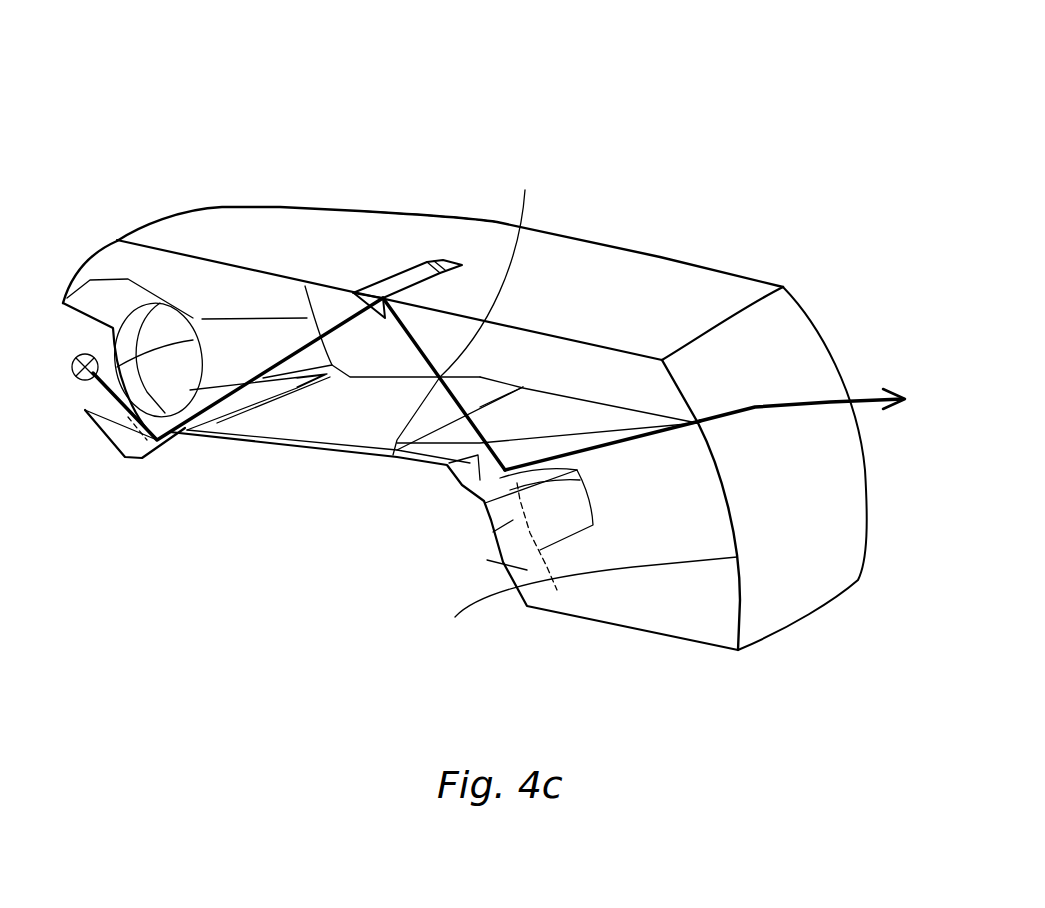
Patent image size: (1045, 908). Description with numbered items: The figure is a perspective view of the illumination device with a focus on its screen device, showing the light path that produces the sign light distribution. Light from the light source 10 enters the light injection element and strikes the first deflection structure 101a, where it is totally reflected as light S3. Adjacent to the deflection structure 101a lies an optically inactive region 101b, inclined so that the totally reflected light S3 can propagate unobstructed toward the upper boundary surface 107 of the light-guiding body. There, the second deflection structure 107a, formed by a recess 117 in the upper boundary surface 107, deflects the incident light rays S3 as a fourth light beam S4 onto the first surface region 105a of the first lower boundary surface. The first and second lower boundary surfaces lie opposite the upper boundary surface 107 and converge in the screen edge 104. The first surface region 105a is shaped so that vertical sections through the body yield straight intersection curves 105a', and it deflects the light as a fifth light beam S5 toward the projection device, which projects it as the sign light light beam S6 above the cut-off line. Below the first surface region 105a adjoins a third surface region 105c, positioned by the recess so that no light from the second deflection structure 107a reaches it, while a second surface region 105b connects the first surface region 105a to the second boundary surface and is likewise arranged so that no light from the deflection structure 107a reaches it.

The light source 10 is at (77, 355).
The first deflection structure 101a is at (137, 453).
The optically inactive region 101b is at (163, 450).
The screen edge 104 is at (558, 445).
The first surface region 105a is at (582, 598).
The intersection curves 105a' is at (371, 557).
The second surface region 105b is at (480, 453).
The third surface region 105c is at (530, 527).
The upper boundary surface 107 is at (567, 283).
The second deflection structure 107a is at (373, 211).
The recess 117 is at (392, 288).
The totally reflected light S3 is at (290, 365).
The fourth light beam S4 is at (402, 328).
The fifth light beam S5 is at (675, 432).
The sign light light beam S6 is at (820, 405).